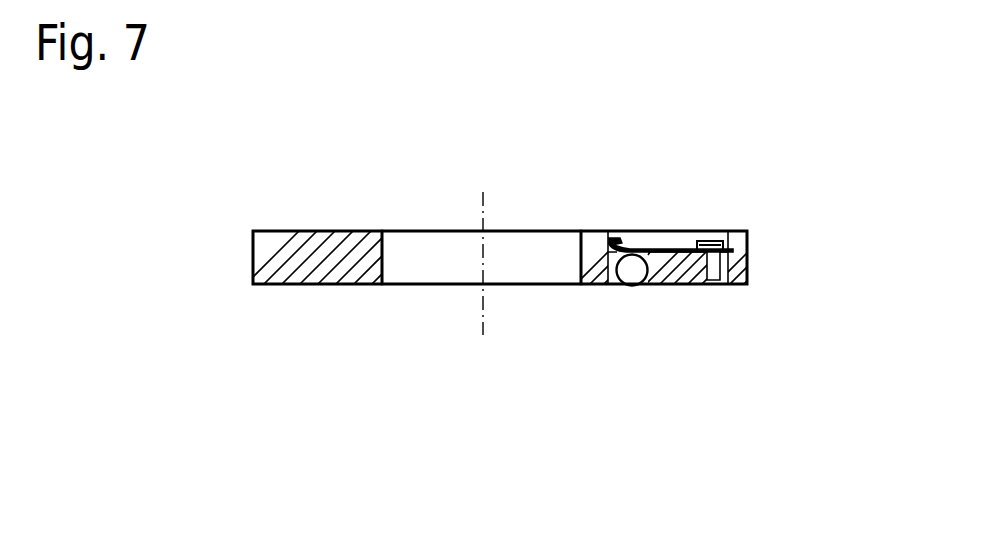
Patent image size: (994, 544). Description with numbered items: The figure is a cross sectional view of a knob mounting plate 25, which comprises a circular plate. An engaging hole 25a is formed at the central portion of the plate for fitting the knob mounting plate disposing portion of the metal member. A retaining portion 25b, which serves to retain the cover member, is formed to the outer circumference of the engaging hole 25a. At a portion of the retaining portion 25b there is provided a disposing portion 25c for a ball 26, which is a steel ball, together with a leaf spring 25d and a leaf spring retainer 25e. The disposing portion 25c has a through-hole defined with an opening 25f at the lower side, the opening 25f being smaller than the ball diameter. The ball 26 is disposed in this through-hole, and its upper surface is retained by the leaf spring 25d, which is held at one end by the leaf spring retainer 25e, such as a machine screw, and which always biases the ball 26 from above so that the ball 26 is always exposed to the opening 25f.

The knob mounting plate 25 is at (288, 110).
The engaging hole 25a is at (393, 287).
The retaining portion 25b is at (280, 287).
The disposing portion 25c is at (675, 287).
The leaf spring 25d is at (616, 233).
The leaf spring retainer 25e is at (725, 233).
The opening 25f is at (655, 287).
The ball 26 is at (618, 282).